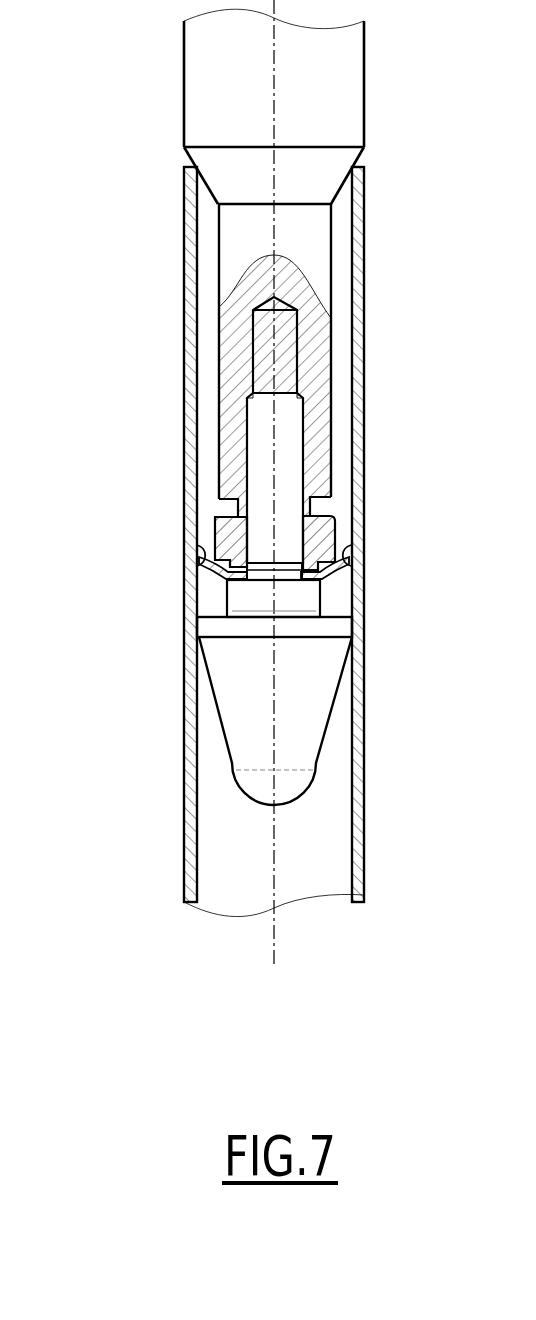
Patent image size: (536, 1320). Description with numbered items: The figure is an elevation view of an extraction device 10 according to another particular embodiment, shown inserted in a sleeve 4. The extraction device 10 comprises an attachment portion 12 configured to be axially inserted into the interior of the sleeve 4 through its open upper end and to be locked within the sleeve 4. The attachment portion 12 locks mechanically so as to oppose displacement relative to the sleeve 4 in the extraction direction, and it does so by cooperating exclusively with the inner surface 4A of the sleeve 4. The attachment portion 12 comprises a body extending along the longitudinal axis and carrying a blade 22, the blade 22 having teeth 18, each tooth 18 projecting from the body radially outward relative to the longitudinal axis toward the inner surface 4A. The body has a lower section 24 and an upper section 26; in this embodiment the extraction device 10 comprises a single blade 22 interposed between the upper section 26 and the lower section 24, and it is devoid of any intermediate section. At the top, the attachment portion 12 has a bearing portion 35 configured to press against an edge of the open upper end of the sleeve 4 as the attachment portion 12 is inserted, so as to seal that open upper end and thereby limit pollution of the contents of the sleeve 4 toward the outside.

The extraction device 10 is at (143, 146).
The bearing portion 35 is at (343, 157).
The attachment portion 12 is at (214, 370).
The upper section 26 is at (236, 435).
The tooth 18 is at (207, 542).
The blade 22 is at (203, 585).
The lower section 24 is at (230, 700).
The inner surface 4A is at (197, 812).
The sleeve 4 is at (184, 871).